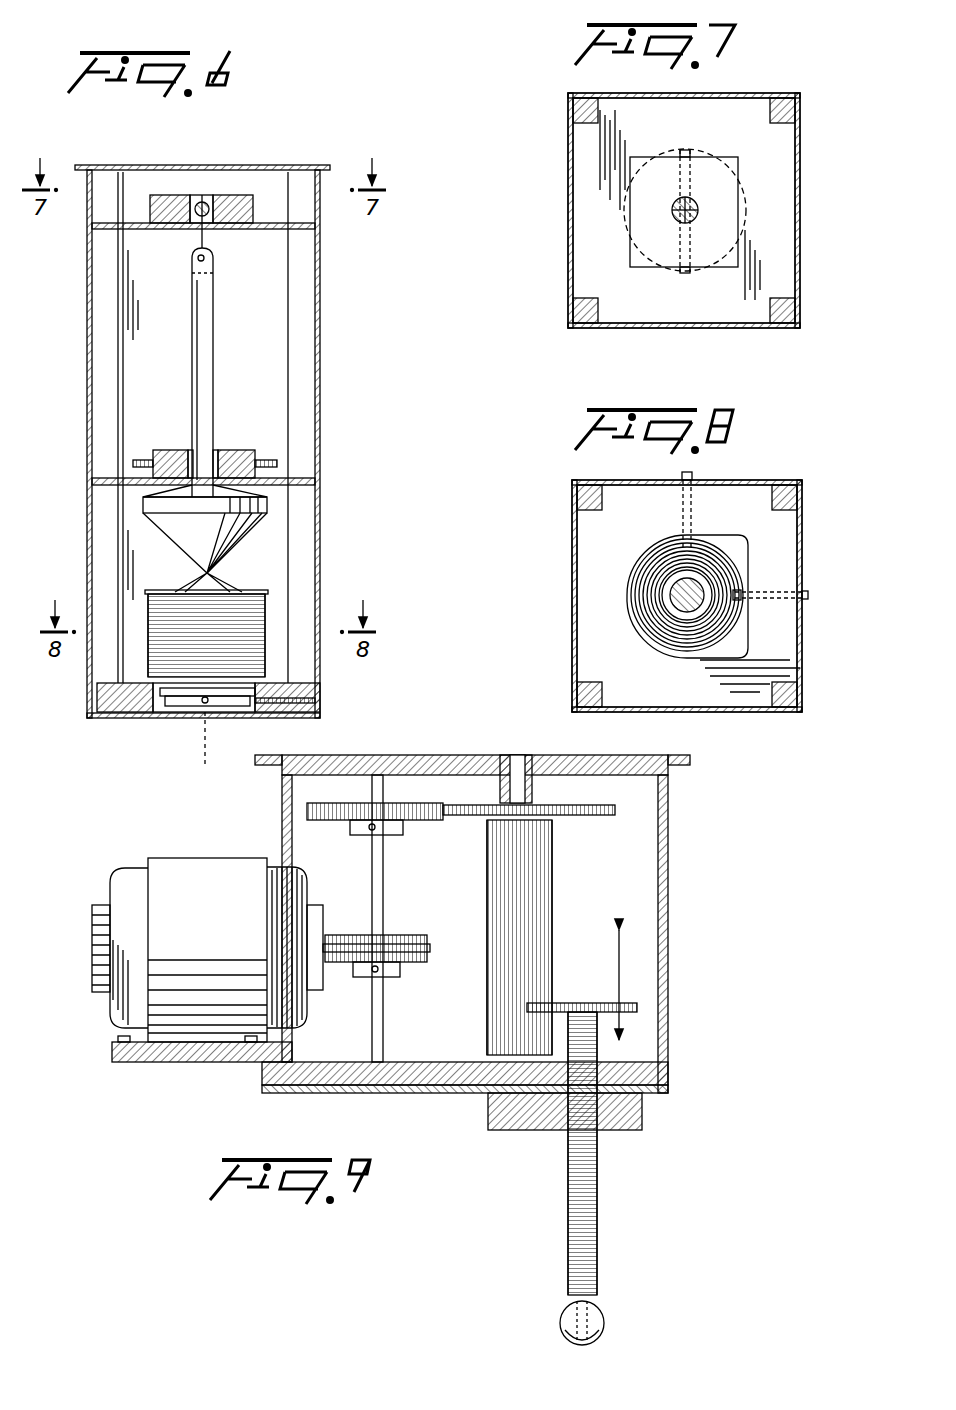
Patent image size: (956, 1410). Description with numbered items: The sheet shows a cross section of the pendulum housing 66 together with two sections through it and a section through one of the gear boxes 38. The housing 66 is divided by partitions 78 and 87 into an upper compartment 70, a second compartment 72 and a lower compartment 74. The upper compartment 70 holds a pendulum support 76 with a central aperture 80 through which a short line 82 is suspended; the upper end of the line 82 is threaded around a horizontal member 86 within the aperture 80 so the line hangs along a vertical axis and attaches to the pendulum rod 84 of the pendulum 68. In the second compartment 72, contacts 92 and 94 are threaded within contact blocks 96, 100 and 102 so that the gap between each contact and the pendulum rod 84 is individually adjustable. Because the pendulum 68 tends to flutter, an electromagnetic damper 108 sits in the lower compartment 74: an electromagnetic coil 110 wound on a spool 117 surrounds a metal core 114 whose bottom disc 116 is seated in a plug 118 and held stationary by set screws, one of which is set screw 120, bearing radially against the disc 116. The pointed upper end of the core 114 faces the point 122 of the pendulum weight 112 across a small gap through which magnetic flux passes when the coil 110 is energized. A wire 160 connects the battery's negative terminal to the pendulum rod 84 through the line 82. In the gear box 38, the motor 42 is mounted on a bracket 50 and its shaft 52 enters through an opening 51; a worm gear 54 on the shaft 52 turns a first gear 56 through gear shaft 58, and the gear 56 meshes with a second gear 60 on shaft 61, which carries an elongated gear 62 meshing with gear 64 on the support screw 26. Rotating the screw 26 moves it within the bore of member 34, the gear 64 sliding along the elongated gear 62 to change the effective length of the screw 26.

In FIG. 9, the support screw 26 is at (597, 1250).
In FIG. 9, the member 34 is at (635, 1110).
In FIG. 9, the gear box 38 is at (668, 1015).
In FIG. 9, the motor 42 is at (152, 868).
In FIG. 9, the bracket 50 is at (190, 1062).
In FIG. 9, the opening 51 is at (292, 866).
In FIG. 9, the motor shaft 52 is at (425, 952).
In FIG. 9, the worm gear 54 is at (400, 935).
In FIG. 9, the first gear 56 is at (408, 810).
In FIG. 9, the gear shaft 58 is at (383, 890).
In FIG. 9, the second gear 60 is at (615, 810).
In FIG. 9, the shaft 61 is at (522, 790).
In FIG. 9, the elongated gear 62 is at (540, 905).
In FIG. 9, the gear 64 is at (630, 1005).
In FIG. 6, the housing 66 is at (318, 452).
In FIG. 7, the housing 66 is at (568, 170).
In FIG. 8, the housing 66 is at (572, 630).
In FIG. 6, the pendulum 68 is at (225, 382).
In FIG. 6, the upper compartment 70 is at (272, 172).
In FIG. 6, the second compartment 72 is at (262, 313).
In FIG. 6, the lower compartment 74 is at (265, 543).
In FIG. 6, the pendulum support 76 is at (162, 195).
In FIG. 7, the pendulum support 76 is at (735, 255).
In FIG. 6, the partition 78 is at (140, 228).
In FIG. 7, the partition 78 is at (600, 237).
In FIG. 6, the central aperture 80 is at (213, 200).
In FIG. 7, the central aperture 80 is at (698, 212).
In FIG. 6, the line 82 is at (207, 243).
In FIG. 6, the pendulum rod 84 is at (195, 322).
In FIG. 6, the horizontal member 86 is at (202, 200).
In FIG. 7, the horizontal member 86 is at (690, 190).
In FIG. 6, the partition 87 is at (300, 483).
In FIG. 6, the contact 92 is at (135, 465).
In FIG. 6, the contact 94 is at (272, 464).
In FIG. 6, the contact block 96 is at (188, 453).
In FIG. 6, the contact block 100 is at (160, 450).
In FIG. 6, the contact block 102 is at (258, 450).
In FIG. 6, the electromagnetic damper 108 is at (152, 583).
In FIG. 6, the electromagnetic coil 110 is at (320, 700).
In FIG. 8, the electromagnetic coil 110 is at (720, 565).
In FIG. 6, the weight 112 is at (160, 522).
In FIG. 6, the core 114 is at (195, 690).
In FIG. 8, the core 114 is at (700, 603).
In FIG. 6, the disc 116 is at (205, 703).
In FIG. 8, the disc 116 is at (705, 670).
In FIG. 6, the spool 117 is at (268, 593).
In FIG. 6, the plug 118 is at (97, 712).
In FIG. 8, the plug 118 is at (690, 505).
In FIG. 6, the set screw 120 is at (205, 578).
In FIG. 8, the set screw 120 is at (806, 592).
In FIG. 6, the point 122 is at (215, 578).
In FIG. 7, the wire 160 is at (670, 268).